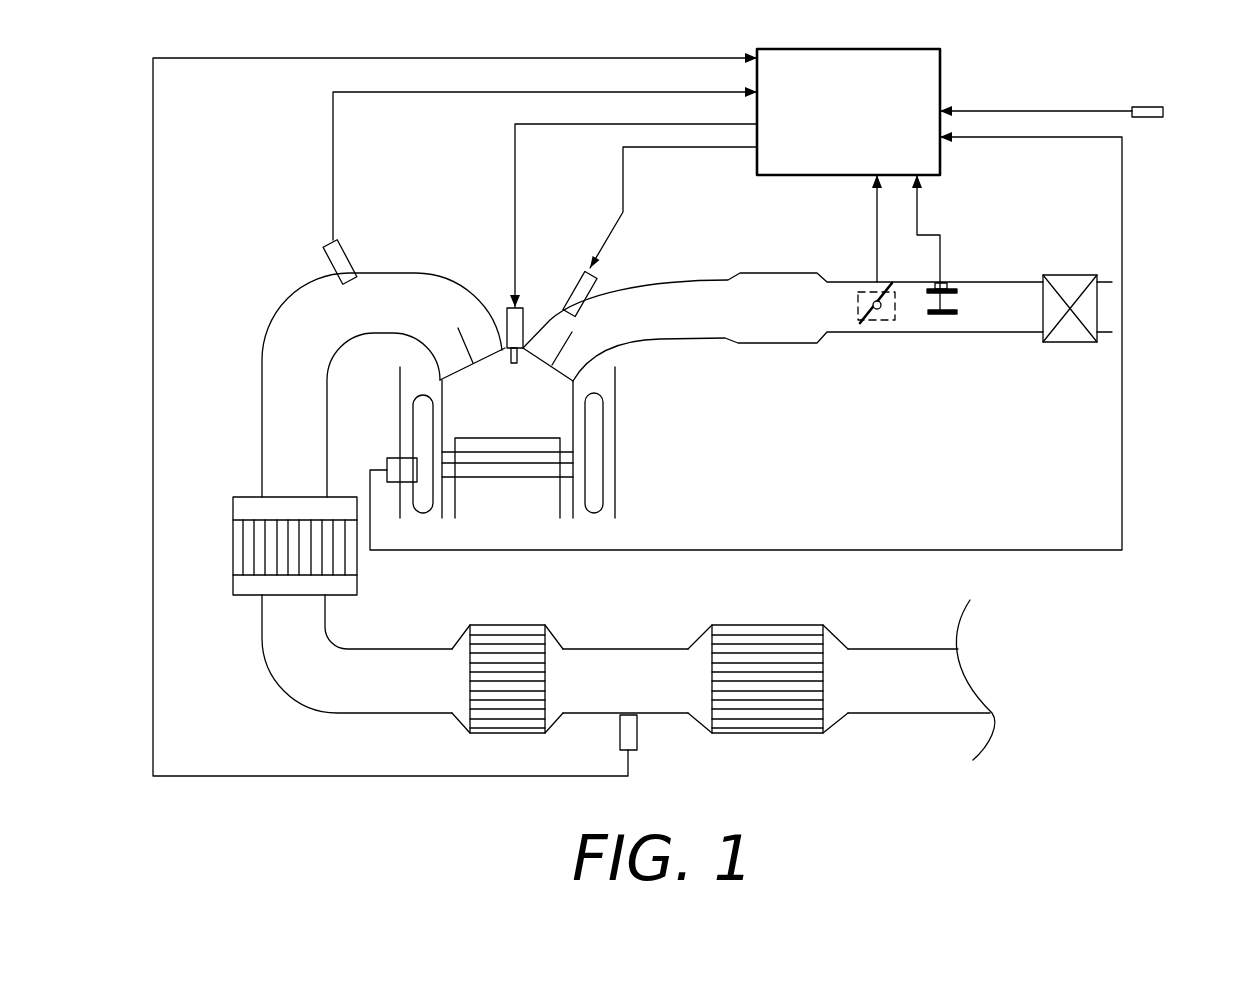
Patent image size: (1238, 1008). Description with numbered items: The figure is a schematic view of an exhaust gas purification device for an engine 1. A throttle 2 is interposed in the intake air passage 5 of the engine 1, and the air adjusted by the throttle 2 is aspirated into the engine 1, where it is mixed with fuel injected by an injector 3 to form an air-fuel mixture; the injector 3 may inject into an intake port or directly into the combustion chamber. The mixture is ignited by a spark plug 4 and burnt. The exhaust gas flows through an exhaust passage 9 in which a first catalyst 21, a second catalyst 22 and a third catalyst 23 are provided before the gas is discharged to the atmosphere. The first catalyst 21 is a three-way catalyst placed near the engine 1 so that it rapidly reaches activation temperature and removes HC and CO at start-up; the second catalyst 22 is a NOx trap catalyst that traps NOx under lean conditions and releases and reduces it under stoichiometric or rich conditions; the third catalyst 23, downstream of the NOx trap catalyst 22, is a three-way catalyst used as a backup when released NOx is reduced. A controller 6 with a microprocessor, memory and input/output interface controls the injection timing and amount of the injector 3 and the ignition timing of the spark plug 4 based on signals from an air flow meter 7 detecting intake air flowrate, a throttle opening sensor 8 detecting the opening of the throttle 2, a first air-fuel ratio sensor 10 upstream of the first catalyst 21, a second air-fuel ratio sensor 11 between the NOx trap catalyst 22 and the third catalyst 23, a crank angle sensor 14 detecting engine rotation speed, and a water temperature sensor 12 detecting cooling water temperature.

The engine 1 is at (624, 447).
The throttle 2 is at (878, 320).
The injector 3 is at (574, 290).
The spark plug 4 is at (507, 306).
The intake air passage 5 is at (683, 340).
The controller 6 is at (785, 176).
The air flow meter 7 is at (953, 314).
The throttle opening sensor 8 is at (862, 288).
The exhaust passage 9 is at (340, 637).
The first air-fuel ratio sensor 10 is at (330, 257).
The second air-fuel ratio sensor 11 is at (637, 738).
The water temperature sensor 12 is at (395, 458).
The crank angle sensor 14 is at (1150, 106).
The first catalyst 21 is at (357, 575).
The second catalyst 22 is at (487, 733).
The third catalyst 23 is at (758, 733).